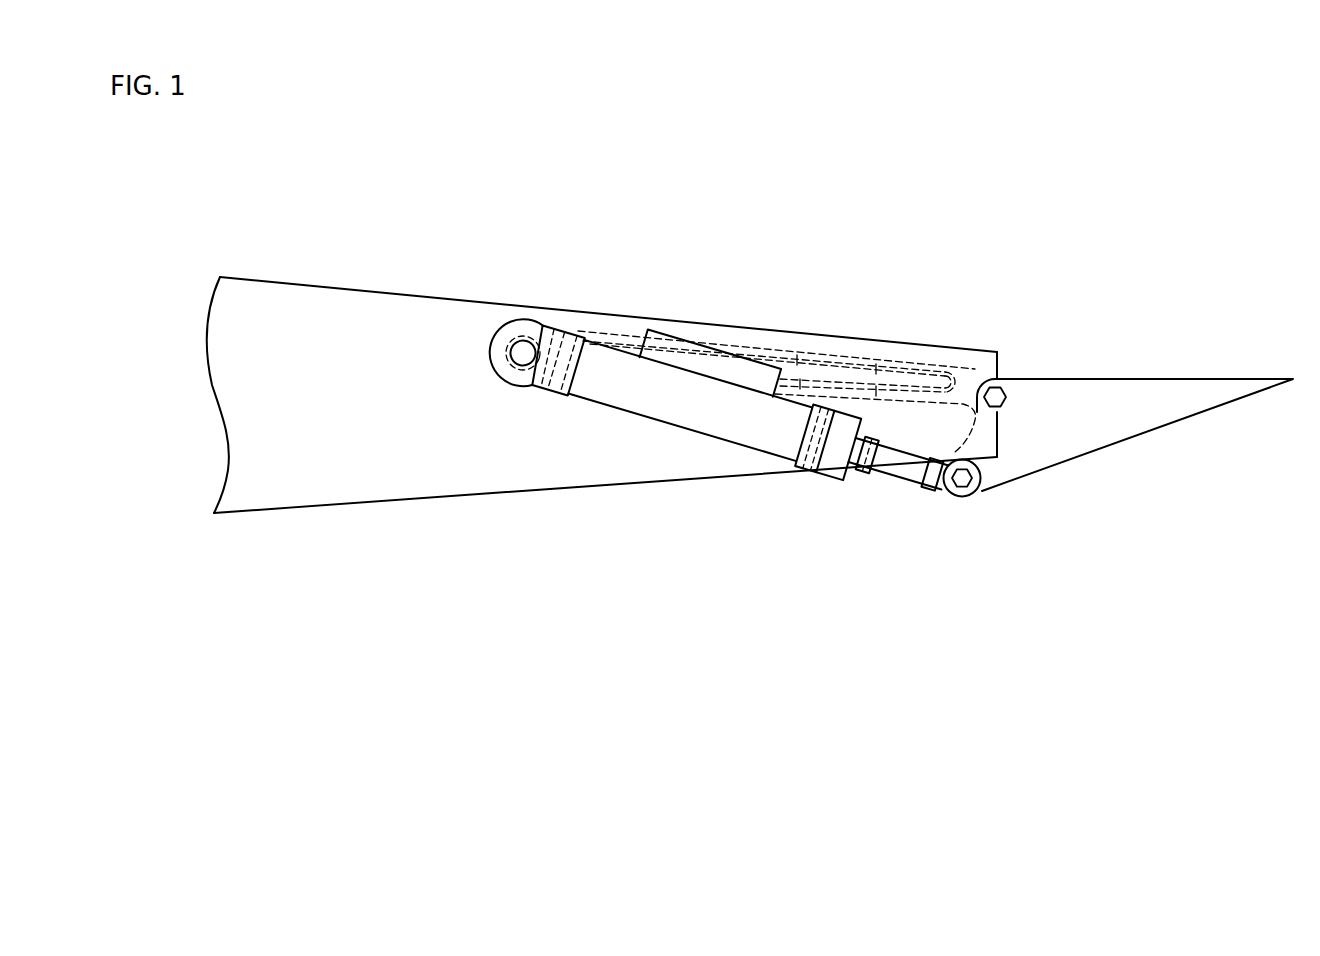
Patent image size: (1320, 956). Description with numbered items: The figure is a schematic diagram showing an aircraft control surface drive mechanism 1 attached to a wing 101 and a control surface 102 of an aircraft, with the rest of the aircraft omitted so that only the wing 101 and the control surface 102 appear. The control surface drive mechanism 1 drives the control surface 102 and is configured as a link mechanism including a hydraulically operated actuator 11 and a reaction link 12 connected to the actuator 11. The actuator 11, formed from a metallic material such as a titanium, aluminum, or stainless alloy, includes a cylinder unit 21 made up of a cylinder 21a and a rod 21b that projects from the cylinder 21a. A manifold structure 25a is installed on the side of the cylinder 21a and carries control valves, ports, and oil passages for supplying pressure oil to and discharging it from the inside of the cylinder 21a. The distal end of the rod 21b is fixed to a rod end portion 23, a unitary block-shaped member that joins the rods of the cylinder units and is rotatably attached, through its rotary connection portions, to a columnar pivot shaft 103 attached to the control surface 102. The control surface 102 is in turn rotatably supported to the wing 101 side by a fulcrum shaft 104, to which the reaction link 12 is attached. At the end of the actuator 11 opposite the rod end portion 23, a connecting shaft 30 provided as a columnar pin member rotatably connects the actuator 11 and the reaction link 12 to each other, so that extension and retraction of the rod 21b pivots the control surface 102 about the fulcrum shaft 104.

The aircraft control surface drive mechanism 1 is at (731, 483).
The actuator 11 is at (693, 387).
The reaction link 12 is at (768, 337).
The cylinder unit 21 is at (693, 402).
The cylinder 21a is at (555, 360).
The rod 21b is at (828, 443).
The rod end portion 23 is at (898, 464).
The manifold structure 25a is at (660, 335).
The connecting shaft 30 is at (516, 350).
The wing 101 is at (393, 478).
The control surface 102 is at (1150, 410).
The pivot shaft 103 is at (963, 482).
The fulcrum shaft 104 is at (997, 393).